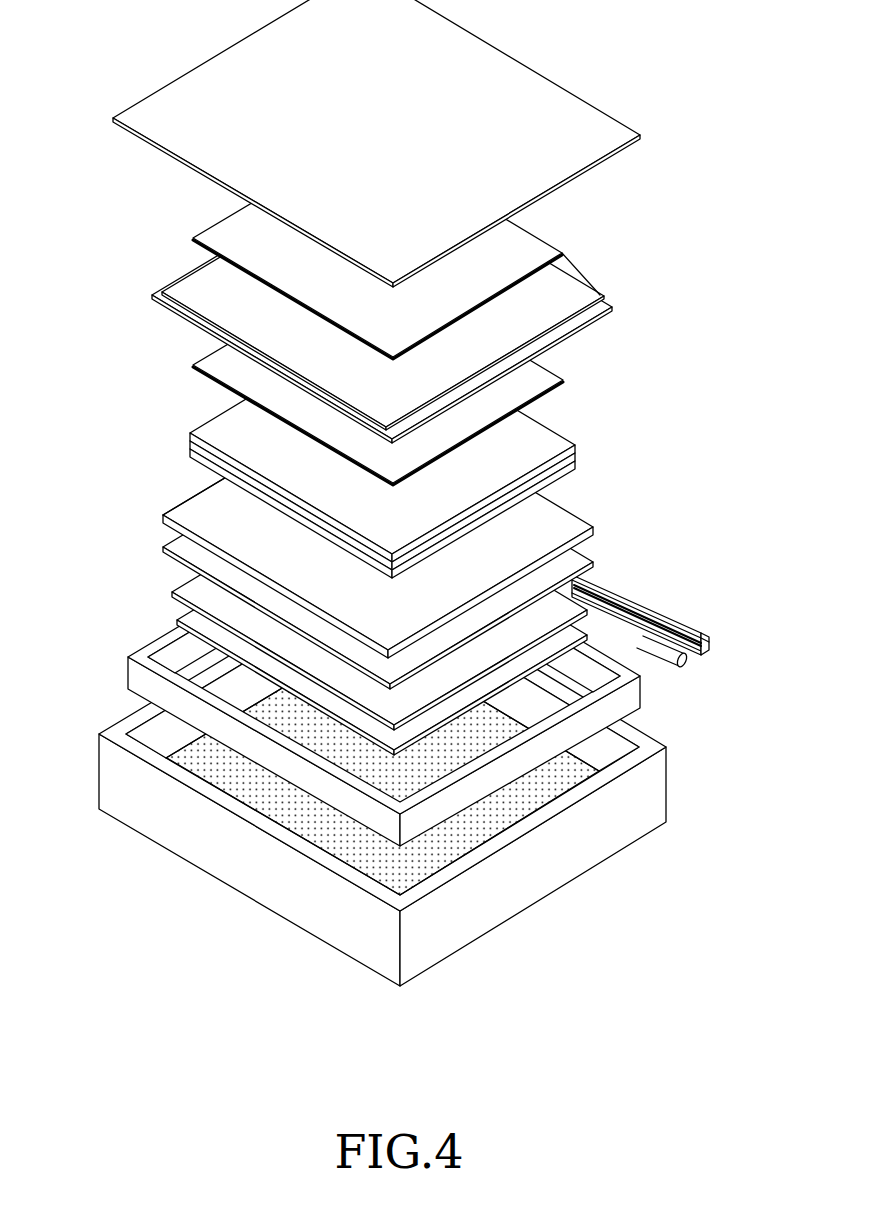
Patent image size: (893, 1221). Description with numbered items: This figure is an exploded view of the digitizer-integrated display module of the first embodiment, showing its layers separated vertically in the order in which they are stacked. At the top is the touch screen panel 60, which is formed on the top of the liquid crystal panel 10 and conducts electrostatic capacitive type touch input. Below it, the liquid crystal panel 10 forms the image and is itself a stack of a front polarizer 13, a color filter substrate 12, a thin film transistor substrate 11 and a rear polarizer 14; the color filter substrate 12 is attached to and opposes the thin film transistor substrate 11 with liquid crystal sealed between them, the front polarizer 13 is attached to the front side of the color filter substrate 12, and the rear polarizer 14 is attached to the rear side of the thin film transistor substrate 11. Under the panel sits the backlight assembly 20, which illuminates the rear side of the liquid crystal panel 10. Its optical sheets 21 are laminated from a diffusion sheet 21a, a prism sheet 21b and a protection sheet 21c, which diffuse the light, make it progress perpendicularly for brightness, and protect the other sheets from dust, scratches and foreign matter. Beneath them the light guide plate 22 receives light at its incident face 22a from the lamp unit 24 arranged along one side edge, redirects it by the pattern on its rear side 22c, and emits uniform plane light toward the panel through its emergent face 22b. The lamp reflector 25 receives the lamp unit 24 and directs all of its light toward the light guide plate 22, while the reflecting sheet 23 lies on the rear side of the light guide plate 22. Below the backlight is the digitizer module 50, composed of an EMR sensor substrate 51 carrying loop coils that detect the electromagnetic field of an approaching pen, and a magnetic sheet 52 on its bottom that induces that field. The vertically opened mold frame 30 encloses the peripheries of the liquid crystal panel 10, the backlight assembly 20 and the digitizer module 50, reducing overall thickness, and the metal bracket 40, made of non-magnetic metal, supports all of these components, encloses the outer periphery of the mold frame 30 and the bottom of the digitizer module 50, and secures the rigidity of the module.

The liquid crystal panel 10 is at (456, 310).
The thin film transistor substrate 11 is at (600, 310).
The color filter substrate 12 is at (578, 290).
The front polarizer 13 is at (537, 250).
The rear polarizer 14 is at (540, 377).
The backlight assembly 20 is at (411, 506).
The optical sheets 21 is at (384, 450).
The diffusion sheet 21a is at (193, 458).
The prism sheet 21b is at (193, 447).
The protection sheet 21c is at (213, 428).
The light guide plate 22 is at (385, 525).
The incident face 22a is at (587, 517).
The emergent face 22b is at (193, 510).
The rear side 22c is at (187, 540).
The reflecting sheet 23 is at (580, 552).
The lamp unit 24 is at (593, 573).
The lamp reflector 25 is at (632, 602).
The mold frame 30 is at (632, 697).
The metal bracket 40 is at (644, 795).
The digitizer module 50 is at (306, 615).
The EMR sensor substrate 51 is at (193, 593).
The magnetic sheet 52 is at (183, 623).
The touch screen panel 60 is at (617, 155).